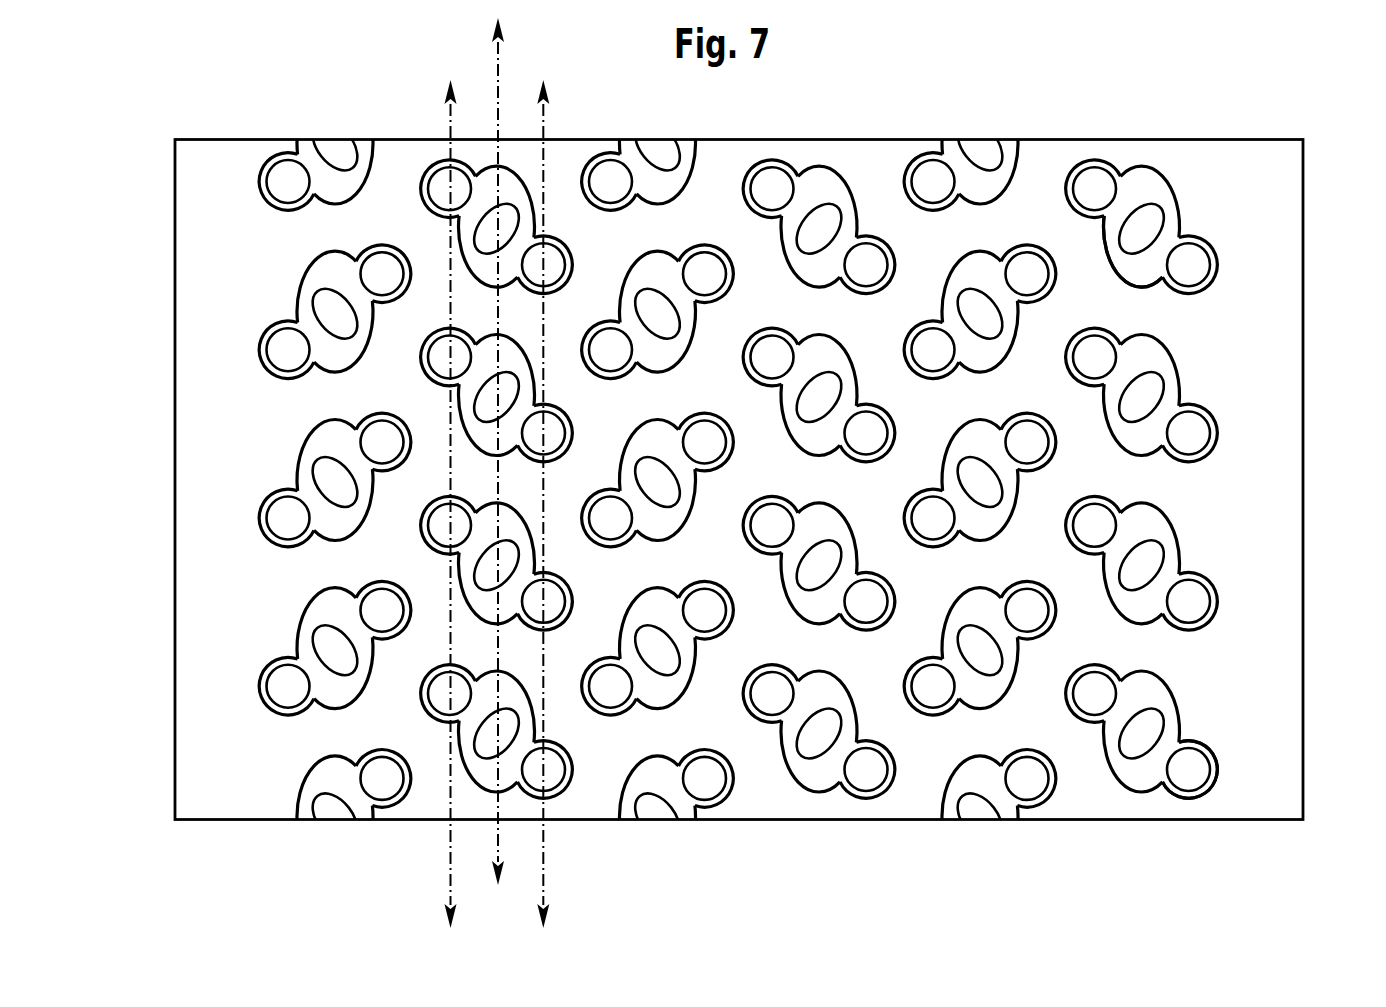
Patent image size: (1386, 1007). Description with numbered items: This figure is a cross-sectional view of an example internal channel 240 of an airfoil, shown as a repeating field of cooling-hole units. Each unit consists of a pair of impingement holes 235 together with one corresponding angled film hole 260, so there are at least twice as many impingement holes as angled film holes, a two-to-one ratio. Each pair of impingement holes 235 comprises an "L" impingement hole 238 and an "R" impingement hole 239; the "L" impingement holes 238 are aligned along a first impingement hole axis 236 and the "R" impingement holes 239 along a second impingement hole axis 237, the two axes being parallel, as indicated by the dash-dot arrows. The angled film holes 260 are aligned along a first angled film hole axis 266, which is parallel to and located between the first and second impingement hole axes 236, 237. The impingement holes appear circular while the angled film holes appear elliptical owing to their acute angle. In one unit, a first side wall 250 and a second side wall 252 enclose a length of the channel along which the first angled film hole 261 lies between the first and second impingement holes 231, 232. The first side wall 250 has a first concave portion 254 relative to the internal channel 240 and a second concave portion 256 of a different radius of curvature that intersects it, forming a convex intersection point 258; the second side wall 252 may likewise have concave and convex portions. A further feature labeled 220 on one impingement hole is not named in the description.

The aperture 220 is at (1035, 790).
The first impingement hole 231 is at (1097, 168).
The second impingement hole 232 is at (1212, 268).
The pair of impingement holes 235 is at (354, 441).
The first impingement hole axis 236 is at (450, 870).
The second impingement hole axis 237 is at (543, 870).
The "L" impingement hole 238 is at (1122, 356).
The "R" impingement hole 239 is at (1208, 435).
The internal channel 240 is at (820, 777).
The first side wall 250 is at (1169, 185).
The second side wall 252 is at (1105, 248).
The first concave portion 254 is at (1175, 703).
The second concave portion 256 is at (1212, 787).
The convex intersection point 258 is at (1180, 740).
The angled film hole 260 is at (298, 295).
The first angled film hole 261 is at (1163, 220).
The first angled film hole axis 266 is at (498, 52).